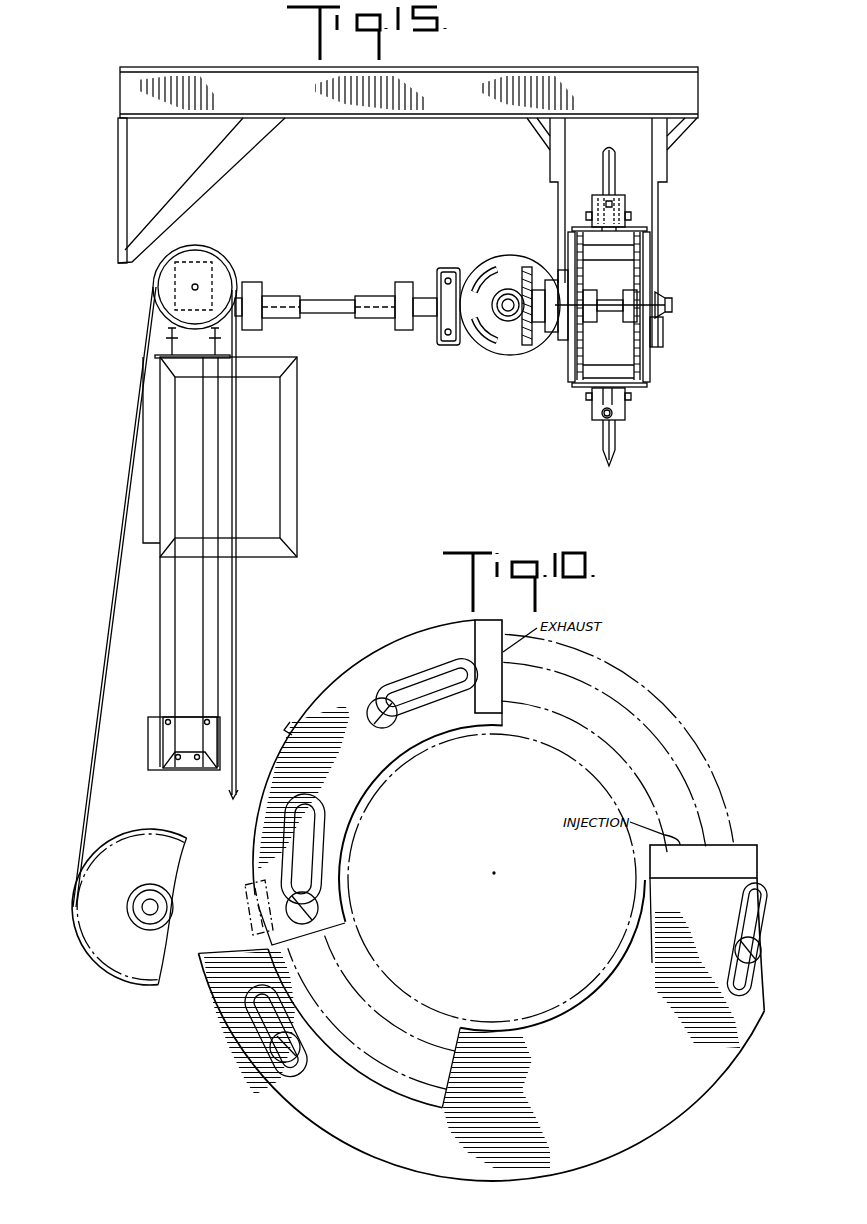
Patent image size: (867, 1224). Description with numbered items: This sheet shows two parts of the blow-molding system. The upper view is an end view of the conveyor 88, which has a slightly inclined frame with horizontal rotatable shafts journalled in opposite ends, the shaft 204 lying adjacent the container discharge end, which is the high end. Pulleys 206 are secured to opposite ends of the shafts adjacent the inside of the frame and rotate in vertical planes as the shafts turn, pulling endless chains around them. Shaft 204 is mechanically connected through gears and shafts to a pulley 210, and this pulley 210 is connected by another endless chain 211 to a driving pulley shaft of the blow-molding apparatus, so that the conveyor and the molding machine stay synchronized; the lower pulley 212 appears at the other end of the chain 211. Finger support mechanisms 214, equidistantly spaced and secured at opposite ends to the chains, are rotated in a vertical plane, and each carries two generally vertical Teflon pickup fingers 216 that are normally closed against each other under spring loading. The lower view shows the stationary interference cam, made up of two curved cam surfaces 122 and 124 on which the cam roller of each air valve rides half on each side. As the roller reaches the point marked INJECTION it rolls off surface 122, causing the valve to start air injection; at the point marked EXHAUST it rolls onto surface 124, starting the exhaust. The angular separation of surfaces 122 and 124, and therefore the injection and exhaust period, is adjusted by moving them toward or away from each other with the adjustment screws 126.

In FIG. 15, the conveyor 88 is at (411, 352).
In FIG. 15, the shaft 204 is at (604, 305).
In FIG. 15, the pulleys 206 is at (594, 322).
In FIG. 15, the pulley 210 is at (163, 272).
In FIG. 15, the endless chain 211 is at (125, 487).
In FIG. 15, the pulley 212 is at (92, 880).
In FIG. 15, the finger support mechanisms 214 is at (622, 413).
In FIG. 15, the pickup fingers 216 is at (630, 163).
In FIG. 10, the cam surface 122 is at (330, 1108).
In FIG. 10, the cam surface 124 is at (330, 698).
In FIG. 10, the adjustment screws 126 is at (386, 698).